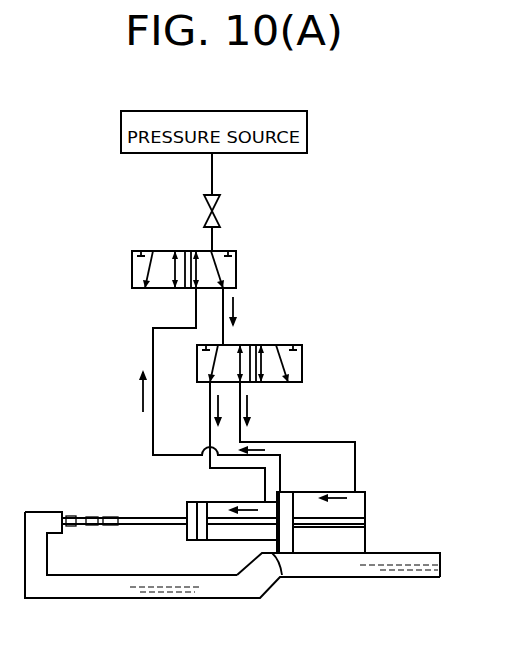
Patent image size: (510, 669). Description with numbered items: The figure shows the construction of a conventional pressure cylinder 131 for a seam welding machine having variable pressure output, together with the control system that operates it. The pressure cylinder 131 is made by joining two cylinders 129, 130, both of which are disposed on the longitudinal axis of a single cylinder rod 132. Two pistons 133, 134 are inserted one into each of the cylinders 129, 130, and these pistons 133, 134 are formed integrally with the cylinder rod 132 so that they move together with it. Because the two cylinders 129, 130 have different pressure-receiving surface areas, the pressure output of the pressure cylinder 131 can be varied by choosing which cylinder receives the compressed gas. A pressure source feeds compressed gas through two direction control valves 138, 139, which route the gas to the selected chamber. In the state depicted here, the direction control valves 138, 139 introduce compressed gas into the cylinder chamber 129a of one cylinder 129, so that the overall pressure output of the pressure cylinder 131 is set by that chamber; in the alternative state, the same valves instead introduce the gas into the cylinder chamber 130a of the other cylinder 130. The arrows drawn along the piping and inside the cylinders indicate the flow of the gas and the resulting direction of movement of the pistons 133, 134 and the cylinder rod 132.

The direction control valve 138 is at (237, 267).
The direction control valve 139 is at (303, 362).
The piston 134 is at (301, 497).
The cylinder chamber 130a is at (350, 508).
The pressure cylinder 131 is at (372, 506).
The cylinder 130 is at (365, 537).
The piston 133 is at (190, 512).
The cylinder rod 132 is at (213, 542).
The cylinder 129 is at (238, 548).
The cylinder chamber 129a is at (285, 576).